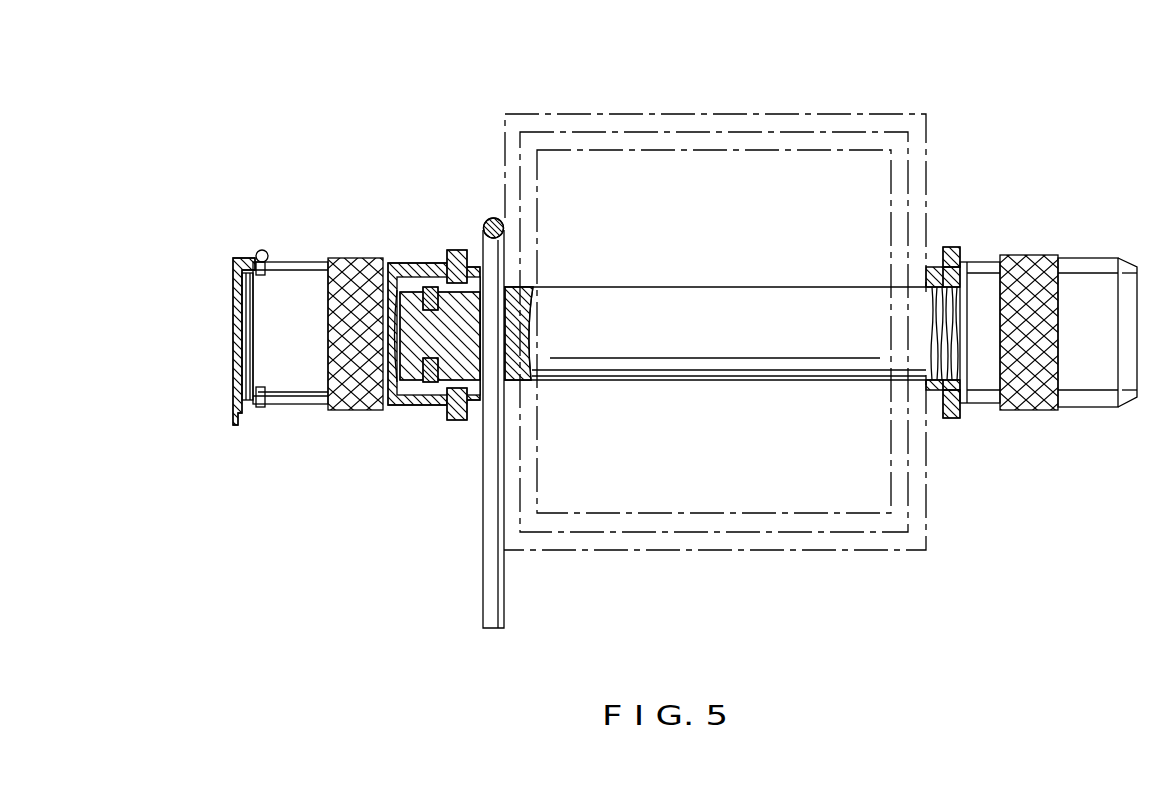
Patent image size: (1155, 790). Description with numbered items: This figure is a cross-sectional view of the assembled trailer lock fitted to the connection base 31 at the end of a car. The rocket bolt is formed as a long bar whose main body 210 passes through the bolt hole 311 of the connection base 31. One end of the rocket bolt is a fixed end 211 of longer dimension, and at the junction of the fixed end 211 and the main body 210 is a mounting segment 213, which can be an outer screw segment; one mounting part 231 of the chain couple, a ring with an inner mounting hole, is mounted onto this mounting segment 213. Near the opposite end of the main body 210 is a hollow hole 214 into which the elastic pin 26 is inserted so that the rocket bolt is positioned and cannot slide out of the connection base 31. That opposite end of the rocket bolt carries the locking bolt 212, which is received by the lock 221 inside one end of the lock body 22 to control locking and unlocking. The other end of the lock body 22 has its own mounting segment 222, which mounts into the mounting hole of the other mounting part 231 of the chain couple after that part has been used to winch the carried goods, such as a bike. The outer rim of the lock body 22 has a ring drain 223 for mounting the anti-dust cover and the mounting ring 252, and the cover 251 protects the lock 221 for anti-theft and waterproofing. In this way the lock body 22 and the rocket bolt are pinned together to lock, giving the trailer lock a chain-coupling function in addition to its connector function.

The lock body 22 is at (297, 262).
The elastic pin 26 is at (490, 218).
The connection base 31 is at (926, 130).
The main body 210 is at (798, 298).
The fixed end 211 is at (1085, 385).
The locking bolt 212 is at (404, 292).
The mounting segment 213 is at (953, 313).
The hollow hole 214 is at (513, 312).
The lock 221 is at (429, 292).
The mounting segment 222 is at (456, 405).
The ring drain 223 is at (263, 404).
The mounting part 231 is at (452, 250).
The cover 251 is at (237, 258).
The mounting ring 252 is at (261, 410).
The bolt hole 311 is at (913, 380).